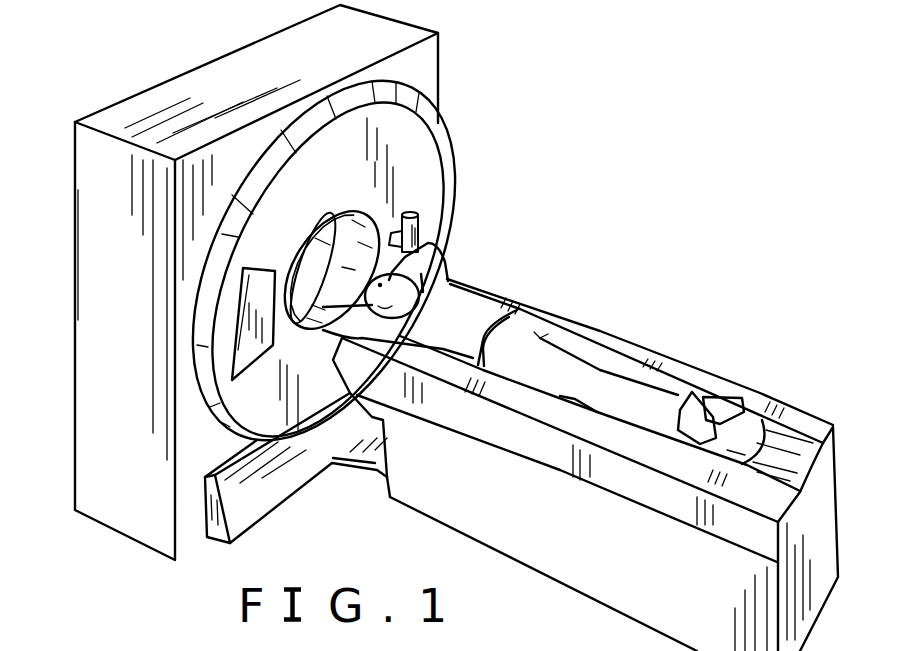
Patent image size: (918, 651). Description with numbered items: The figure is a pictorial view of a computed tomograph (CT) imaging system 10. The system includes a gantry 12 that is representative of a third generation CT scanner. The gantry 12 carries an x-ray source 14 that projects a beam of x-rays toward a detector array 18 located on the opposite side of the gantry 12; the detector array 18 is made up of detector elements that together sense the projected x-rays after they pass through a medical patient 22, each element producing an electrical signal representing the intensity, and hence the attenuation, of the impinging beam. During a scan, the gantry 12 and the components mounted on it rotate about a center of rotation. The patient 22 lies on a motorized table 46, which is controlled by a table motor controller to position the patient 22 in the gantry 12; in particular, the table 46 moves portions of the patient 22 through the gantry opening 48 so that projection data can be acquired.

The computed tomograph (CT) imaging system 10 is at (360, 491).
The gantry 12 is at (106, 167).
The x-ray source 14 is at (420, 233).
The detector array 18 is at (245, 345).
The medical patient 22 is at (460, 310).
The motorized table 46 is at (465, 502).
The gantry opening 48 is at (277, 275).